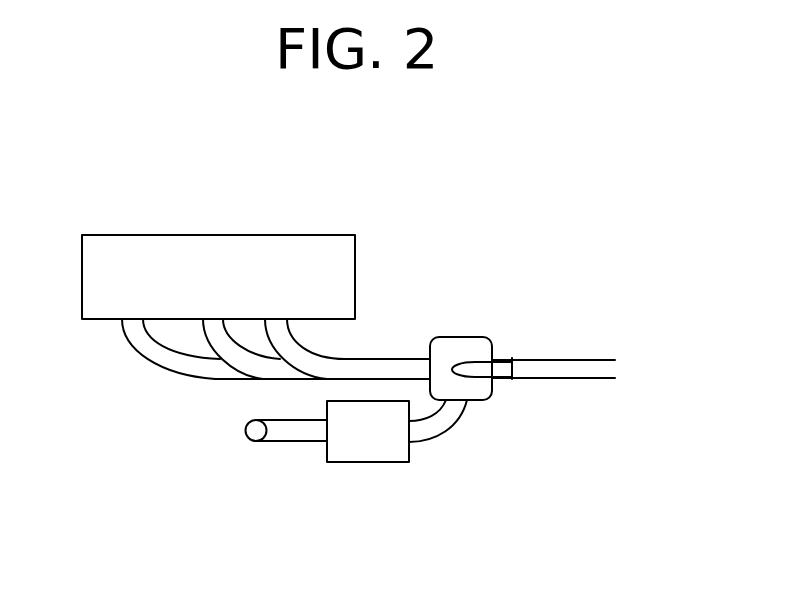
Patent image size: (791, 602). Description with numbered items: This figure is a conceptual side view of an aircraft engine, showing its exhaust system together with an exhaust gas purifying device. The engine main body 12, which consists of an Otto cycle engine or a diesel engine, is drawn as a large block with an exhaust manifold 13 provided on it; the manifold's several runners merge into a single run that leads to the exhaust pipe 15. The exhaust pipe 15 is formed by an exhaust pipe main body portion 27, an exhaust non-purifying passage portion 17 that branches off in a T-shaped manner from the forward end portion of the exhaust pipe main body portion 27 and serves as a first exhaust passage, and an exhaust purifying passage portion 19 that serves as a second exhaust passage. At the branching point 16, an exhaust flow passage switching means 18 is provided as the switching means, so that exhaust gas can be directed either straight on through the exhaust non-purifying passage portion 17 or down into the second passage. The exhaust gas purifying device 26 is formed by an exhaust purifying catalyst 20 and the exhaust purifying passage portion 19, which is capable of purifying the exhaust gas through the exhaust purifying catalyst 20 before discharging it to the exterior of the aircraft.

The engine main body 12 is at (200, 233).
The exhaust manifold 13 is at (166, 367).
The exhaust pipe main body portion 27 is at (385, 357).
The exhaust flow passage switching means 18 is at (467, 337).
The exhaust non-purifying passage portion 17 is at (570, 380).
The branching point 16 is at (477, 405).
The exhaust purifying catalyst 20 is at (360, 462).
The exhaust purifying passage portion 19 is at (275, 443).
The exhaust gas purifying device 26 is at (436, 458).
The exhaust pipe 15 is at (493, 262).